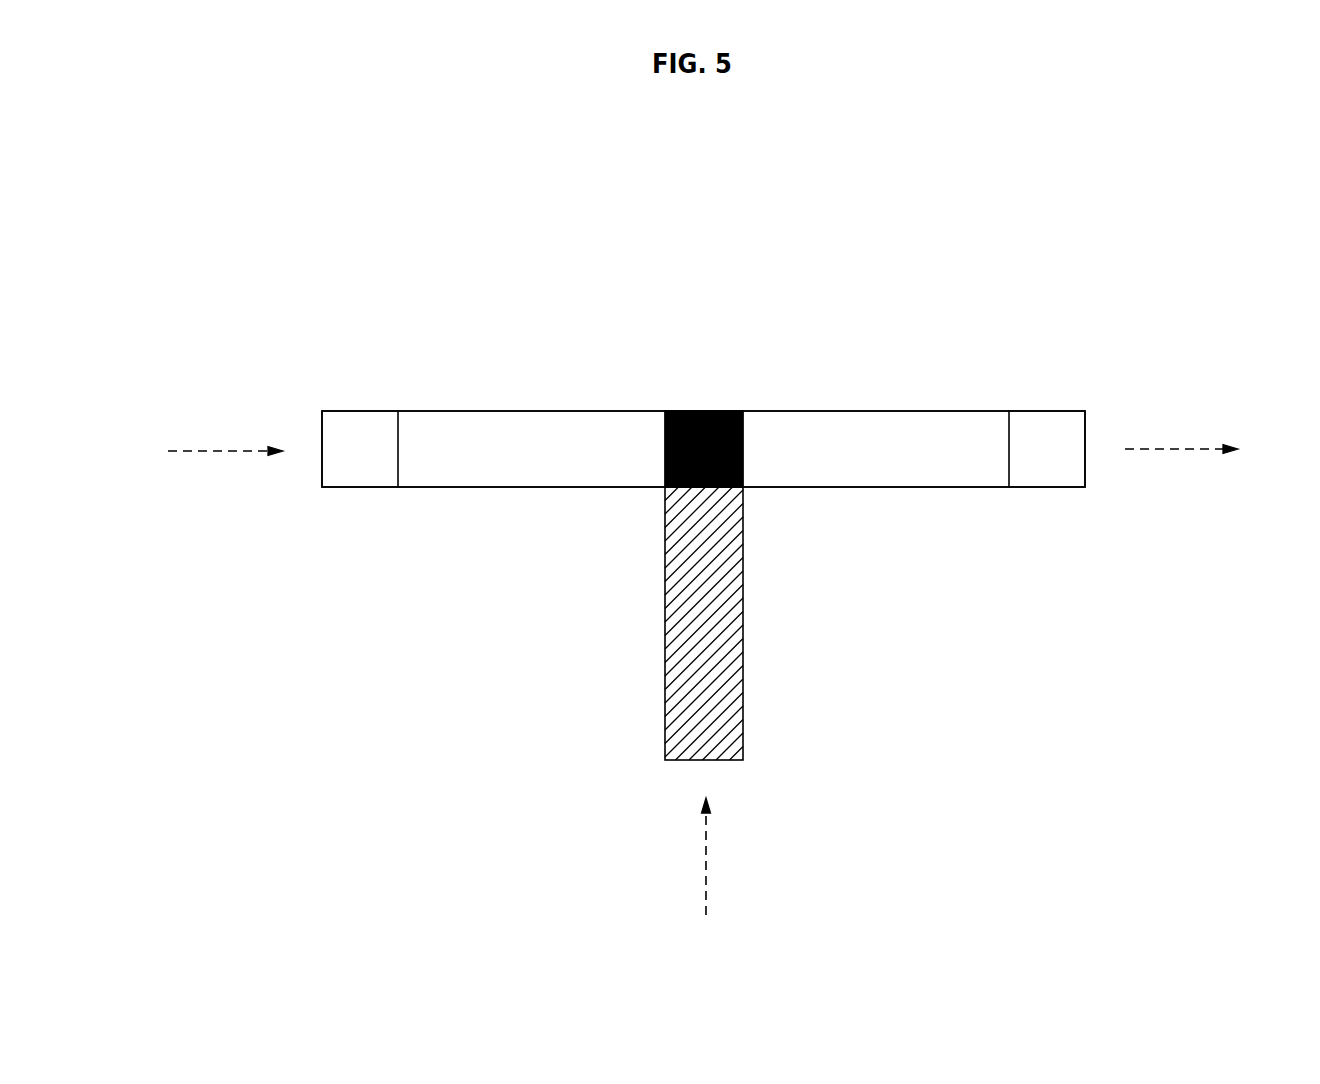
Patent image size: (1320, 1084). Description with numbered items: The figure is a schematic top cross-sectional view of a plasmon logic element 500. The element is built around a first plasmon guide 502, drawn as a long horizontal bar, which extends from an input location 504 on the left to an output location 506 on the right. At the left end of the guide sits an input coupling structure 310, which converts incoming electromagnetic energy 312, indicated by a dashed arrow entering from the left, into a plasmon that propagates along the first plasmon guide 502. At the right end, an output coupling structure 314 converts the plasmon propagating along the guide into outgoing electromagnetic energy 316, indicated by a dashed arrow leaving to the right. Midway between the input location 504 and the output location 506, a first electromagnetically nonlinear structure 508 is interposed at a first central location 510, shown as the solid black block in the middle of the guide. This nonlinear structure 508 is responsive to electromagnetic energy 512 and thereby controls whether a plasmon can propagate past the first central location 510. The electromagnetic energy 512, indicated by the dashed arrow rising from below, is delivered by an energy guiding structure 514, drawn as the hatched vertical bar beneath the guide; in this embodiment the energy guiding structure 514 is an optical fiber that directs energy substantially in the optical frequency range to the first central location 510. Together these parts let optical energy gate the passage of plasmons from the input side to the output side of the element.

The plasmon logic element 500 is at (982, 341).
The first plasmon guide 502 is at (551, 410).
The input location 504 is at (455, 488).
The output location 506 is at (960, 488).
The first electromagnetically nonlinear structure 508 is at (704, 408).
The first central location 510 is at (704, 449).
The electromagnetic energy 512 is at (705, 878).
The energy guiding structure 514 is at (743, 688).
The input coupling structure 310 is at (360, 452).
The incoming electromagnetic energy 312 is at (198, 454).
The output coupling structure 314 is at (1043, 451).
The outgoing electromagnetic energy 316 is at (1211, 449).